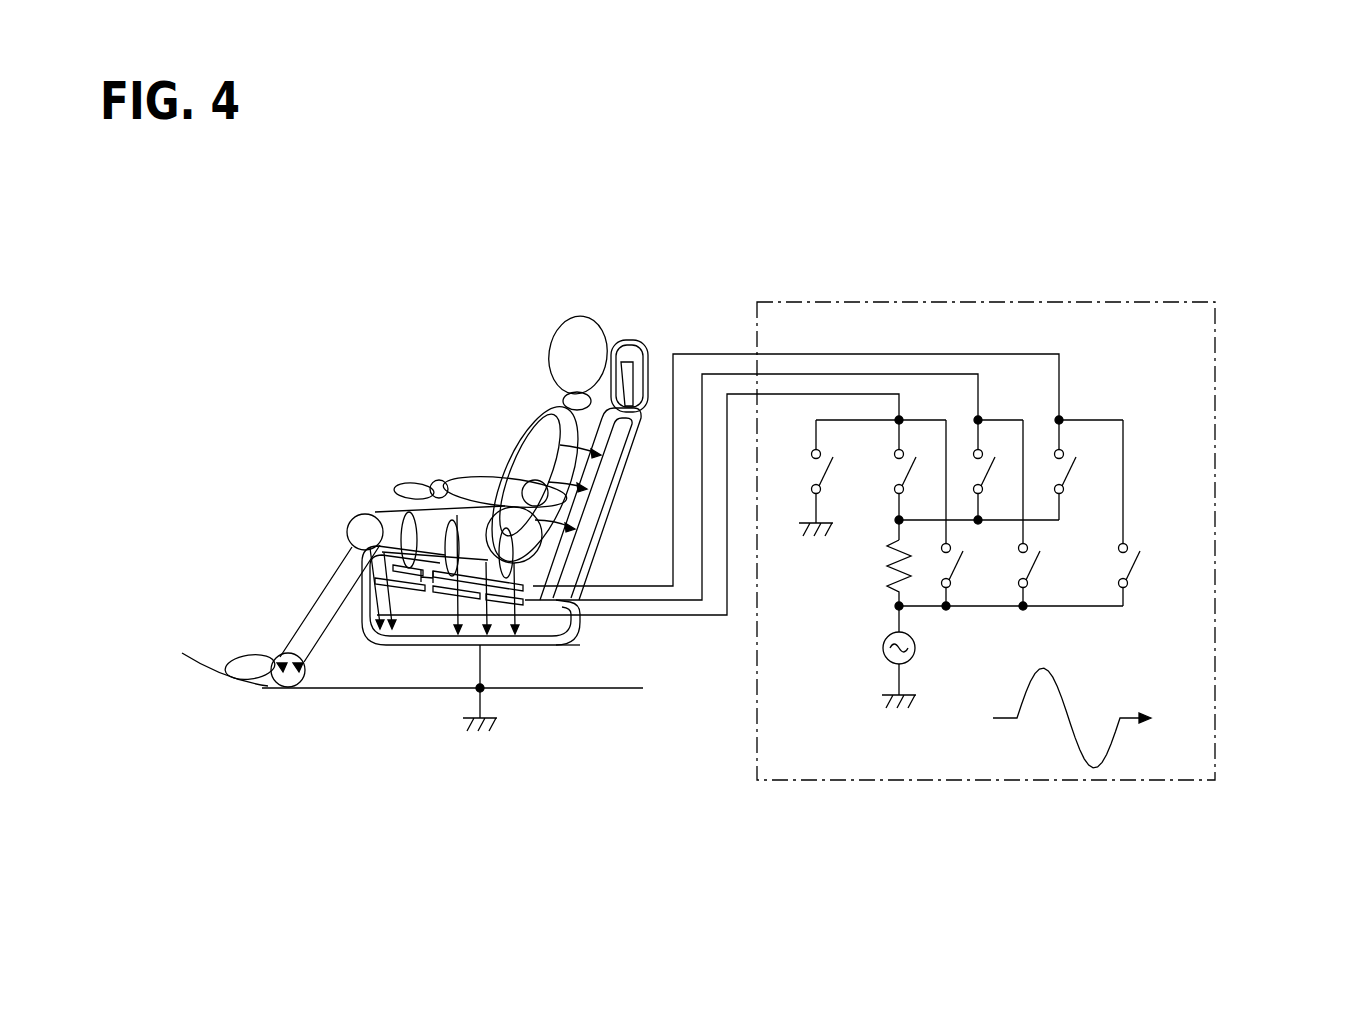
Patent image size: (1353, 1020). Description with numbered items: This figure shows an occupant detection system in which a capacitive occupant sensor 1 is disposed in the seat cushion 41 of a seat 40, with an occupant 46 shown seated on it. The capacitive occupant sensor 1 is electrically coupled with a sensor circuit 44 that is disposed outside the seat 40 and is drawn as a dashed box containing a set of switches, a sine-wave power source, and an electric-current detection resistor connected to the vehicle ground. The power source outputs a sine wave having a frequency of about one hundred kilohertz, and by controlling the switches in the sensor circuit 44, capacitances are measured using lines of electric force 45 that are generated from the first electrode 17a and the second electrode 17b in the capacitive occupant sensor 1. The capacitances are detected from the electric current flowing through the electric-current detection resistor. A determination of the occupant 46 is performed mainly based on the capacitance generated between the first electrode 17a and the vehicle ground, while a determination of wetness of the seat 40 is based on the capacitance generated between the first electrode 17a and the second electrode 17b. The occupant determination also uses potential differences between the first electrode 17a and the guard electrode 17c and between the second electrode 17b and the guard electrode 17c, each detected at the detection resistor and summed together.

The capacitive occupant sensor 1 is at (527, 640).
The first electrode 17a is at (450, 603).
The second electrode 17b is at (400, 625).
The guard electrode 17c is at (503, 603).
The seat 40 is at (582, 648).
The seat cushion 41 is at (428, 600).
The sensor circuit 44 is at (1215, 406).
The lines of electric force 45 is at (513, 457).
The occupant 46 is at (575, 316).